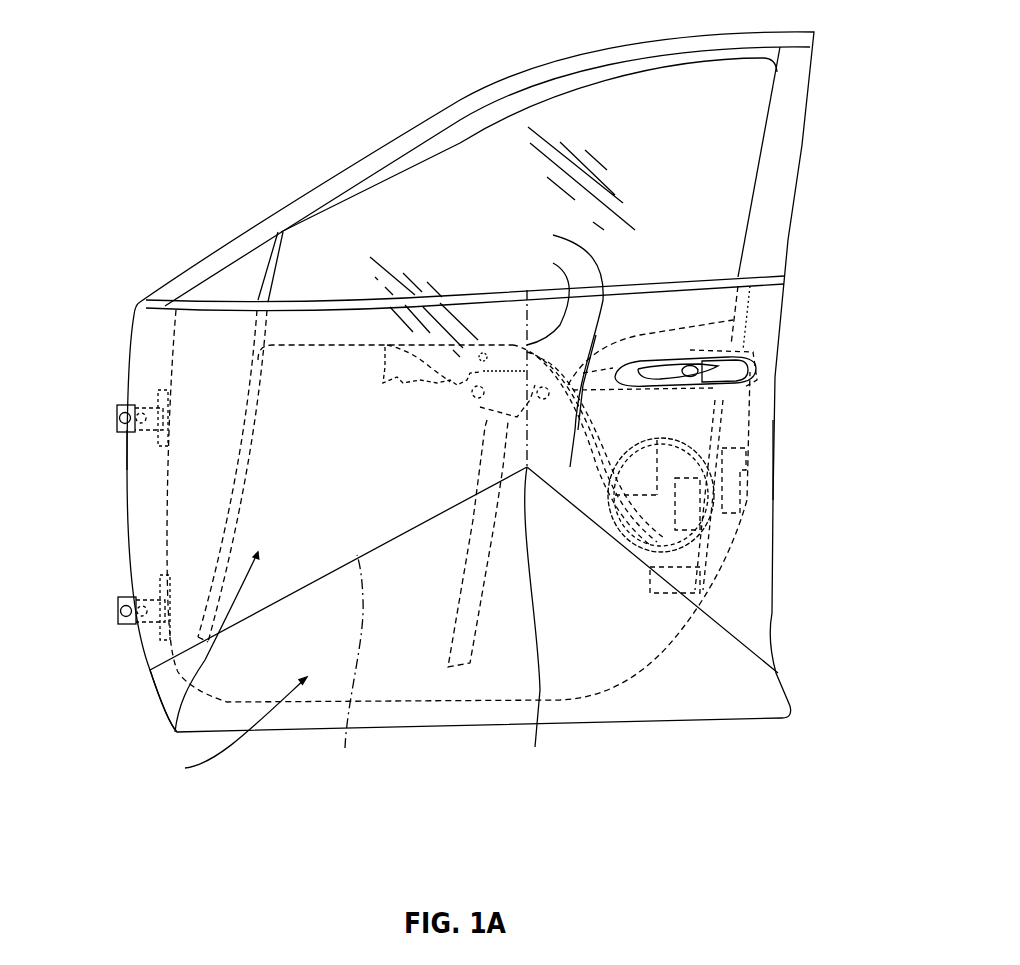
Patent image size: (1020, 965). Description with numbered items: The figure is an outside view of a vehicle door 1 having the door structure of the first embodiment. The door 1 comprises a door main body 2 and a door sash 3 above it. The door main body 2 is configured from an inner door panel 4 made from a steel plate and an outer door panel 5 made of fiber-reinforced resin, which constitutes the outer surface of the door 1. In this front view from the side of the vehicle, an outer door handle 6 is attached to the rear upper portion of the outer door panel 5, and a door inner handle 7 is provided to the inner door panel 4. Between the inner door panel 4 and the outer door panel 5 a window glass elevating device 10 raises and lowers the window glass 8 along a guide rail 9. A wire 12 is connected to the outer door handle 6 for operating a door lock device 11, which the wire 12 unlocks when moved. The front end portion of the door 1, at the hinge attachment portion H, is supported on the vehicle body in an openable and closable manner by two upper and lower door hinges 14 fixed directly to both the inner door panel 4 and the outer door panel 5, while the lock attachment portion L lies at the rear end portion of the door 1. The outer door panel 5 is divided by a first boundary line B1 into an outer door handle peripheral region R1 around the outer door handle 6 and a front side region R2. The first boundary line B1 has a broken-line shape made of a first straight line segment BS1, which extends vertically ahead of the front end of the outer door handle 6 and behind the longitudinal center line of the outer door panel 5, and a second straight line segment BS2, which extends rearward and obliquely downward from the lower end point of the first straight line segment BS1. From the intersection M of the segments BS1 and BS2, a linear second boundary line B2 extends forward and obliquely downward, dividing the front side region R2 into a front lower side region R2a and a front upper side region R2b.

The door 1 is at (167, 192).
The door main body 2 is at (117, 351).
The door sash 3 is at (317, 180).
The inner door panel 4 is at (167, 510).
The outer door panel 5 is at (160, 710).
The outer door handle 6 is at (756, 346).
The door inner handle 7 is at (422, 343).
The window glass 8 is at (583, 105).
The guide rail 9 is at (217, 530).
The window glass elevating device 10 is at (465, 590).
The door lock device 11 is at (733, 513).
The wire 12 is at (690, 557).
The door hinges 14 is at (115, 420).
The hinge attachment portion H is at (115, 443).
The lock attachment portion L is at (761, 460).
The intersection M is at (532, 531).
The first boundary line B1 is at (508, 222).
The second boundary line B2 is at (350, 664).
The first straight line segment BS1 is at (539, 296).
The second straight line segment BS2 is at (556, 342).
The outer door handle peripheral region R1 is at (663, 305).
The front side region R2 is at (110, 733).
The front lower side region R2a is at (185, 768).
The front upper side region R2b is at (175, 732).